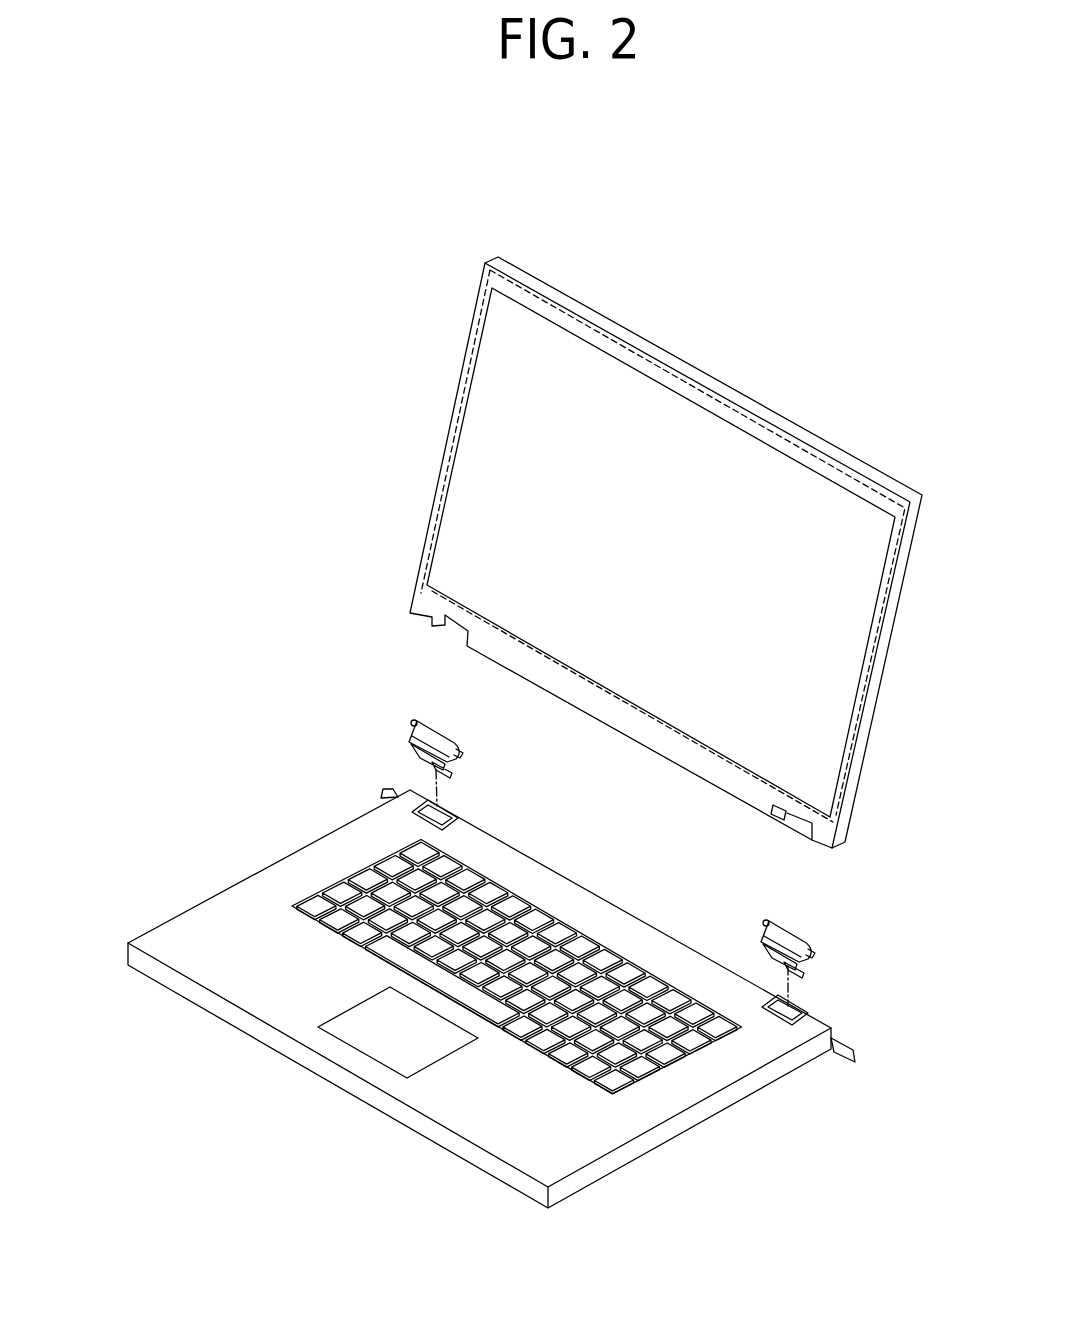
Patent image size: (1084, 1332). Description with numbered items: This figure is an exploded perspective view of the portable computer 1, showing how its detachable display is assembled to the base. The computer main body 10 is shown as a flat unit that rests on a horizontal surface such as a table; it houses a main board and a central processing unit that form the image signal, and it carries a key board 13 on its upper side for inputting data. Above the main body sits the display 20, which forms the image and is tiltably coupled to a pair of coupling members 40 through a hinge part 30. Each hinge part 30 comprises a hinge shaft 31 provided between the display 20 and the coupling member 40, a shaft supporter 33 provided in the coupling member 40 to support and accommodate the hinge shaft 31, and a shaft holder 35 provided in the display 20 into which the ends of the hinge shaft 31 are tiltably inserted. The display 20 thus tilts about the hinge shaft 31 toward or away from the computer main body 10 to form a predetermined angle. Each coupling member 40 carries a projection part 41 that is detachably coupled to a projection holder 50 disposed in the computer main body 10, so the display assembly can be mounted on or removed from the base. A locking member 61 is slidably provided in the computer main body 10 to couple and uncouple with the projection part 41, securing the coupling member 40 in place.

The portable computer 1 is at (148, 583).
The computer main body 10 is at (493, 999).
The key board 13 is at (626, 1087).
The display 20 is at (893, 630).
The hinge part 30 is at (554, 791).
The hinge shaft 31 is at (411, 723).
The shaft supporter 33 is at (437, 719).
The shaft holder 35 is at (432, 621).
The coupling member 40 is at (656, 859).
The projection part 41 is at (459, 773).
The projection holder 50 is at (412, 818).
The locking member 61 is at (381, 792).